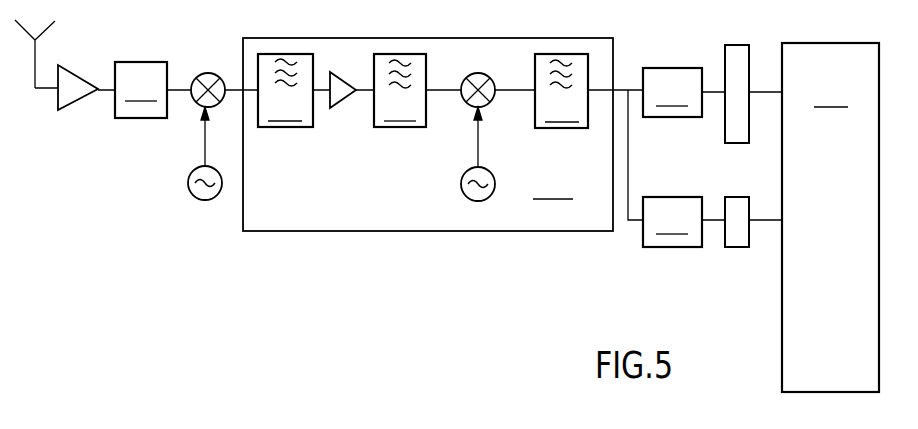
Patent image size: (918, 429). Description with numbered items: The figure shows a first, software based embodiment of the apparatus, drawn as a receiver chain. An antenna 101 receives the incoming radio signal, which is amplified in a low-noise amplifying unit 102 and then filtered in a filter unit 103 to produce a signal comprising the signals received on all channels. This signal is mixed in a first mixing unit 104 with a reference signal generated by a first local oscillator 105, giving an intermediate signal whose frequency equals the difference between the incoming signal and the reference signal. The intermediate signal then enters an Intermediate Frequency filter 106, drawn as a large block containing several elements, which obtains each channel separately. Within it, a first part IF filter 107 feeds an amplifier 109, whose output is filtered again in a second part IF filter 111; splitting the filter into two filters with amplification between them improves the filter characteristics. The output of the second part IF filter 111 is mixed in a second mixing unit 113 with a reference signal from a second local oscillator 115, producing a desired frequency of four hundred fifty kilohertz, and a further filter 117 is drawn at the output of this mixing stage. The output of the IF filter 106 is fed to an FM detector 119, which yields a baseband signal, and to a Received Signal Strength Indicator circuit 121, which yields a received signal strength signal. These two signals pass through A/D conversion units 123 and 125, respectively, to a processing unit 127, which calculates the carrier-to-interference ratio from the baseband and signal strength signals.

The antenna 101 is at (41, 36).
The low-noise amplifying unit 102 is at (68, 109).
The filter unit 103 is at (141, 90).
The first mixing unit 104 is at (196, 73).
The first local oscillator 105 is at (197, 171).
The Intermediate Frequency (IF) filter 106 is at (428, 134).
The first part IF filter 107 is at (285, 90).
The amplifier 109 is at (335, 106).
The second part IF filter 111 is at (400, 90).
The second mixing unit 113 is at (478, 73).
The second local oscillator 115 is at (468, 178).
The third IF filter 117 is at (561, 91).
The FM detector 119 is at (672, 92).
The Received Signal Strength Indicator (RSSI) circuit 121 is at (672, 222).
The A/D conversion unit 123 is at (726, 131).
The A/D conversion unit 125 is at (736, 196).
The processing unit 127 is at (830, 217).